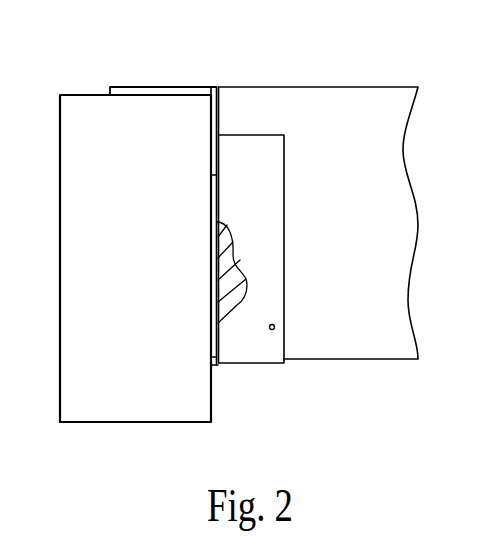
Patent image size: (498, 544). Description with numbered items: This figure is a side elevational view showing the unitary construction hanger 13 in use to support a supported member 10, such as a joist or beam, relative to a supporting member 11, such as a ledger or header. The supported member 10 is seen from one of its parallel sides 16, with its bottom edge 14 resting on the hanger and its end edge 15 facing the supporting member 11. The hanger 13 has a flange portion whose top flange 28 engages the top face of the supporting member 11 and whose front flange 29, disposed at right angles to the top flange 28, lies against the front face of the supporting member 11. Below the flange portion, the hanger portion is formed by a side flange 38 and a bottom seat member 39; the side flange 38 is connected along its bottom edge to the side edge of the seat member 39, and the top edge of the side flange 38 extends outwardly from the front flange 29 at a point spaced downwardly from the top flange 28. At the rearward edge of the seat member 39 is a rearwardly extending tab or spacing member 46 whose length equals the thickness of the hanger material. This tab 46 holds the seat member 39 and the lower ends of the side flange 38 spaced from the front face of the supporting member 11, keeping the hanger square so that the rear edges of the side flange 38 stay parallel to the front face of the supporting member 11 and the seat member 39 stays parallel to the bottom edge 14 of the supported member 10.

The supported member 10 is at (355, 110).
The supporting member 11 is at (123, 398).
The hanger 13 is at (158, 82).
The bottom edge 14 is at (373, 360).
The end edge 15 is at (237, 306).
The side 16 is at (362, 267).
The top flange 28 is at (178, 87).
The front flange 29 is at (218, 120).
The side flange 38 is at (273, 150).
The seat member 39 is at (262, 367).
The tab or spacing member 46 is at (215, 366).